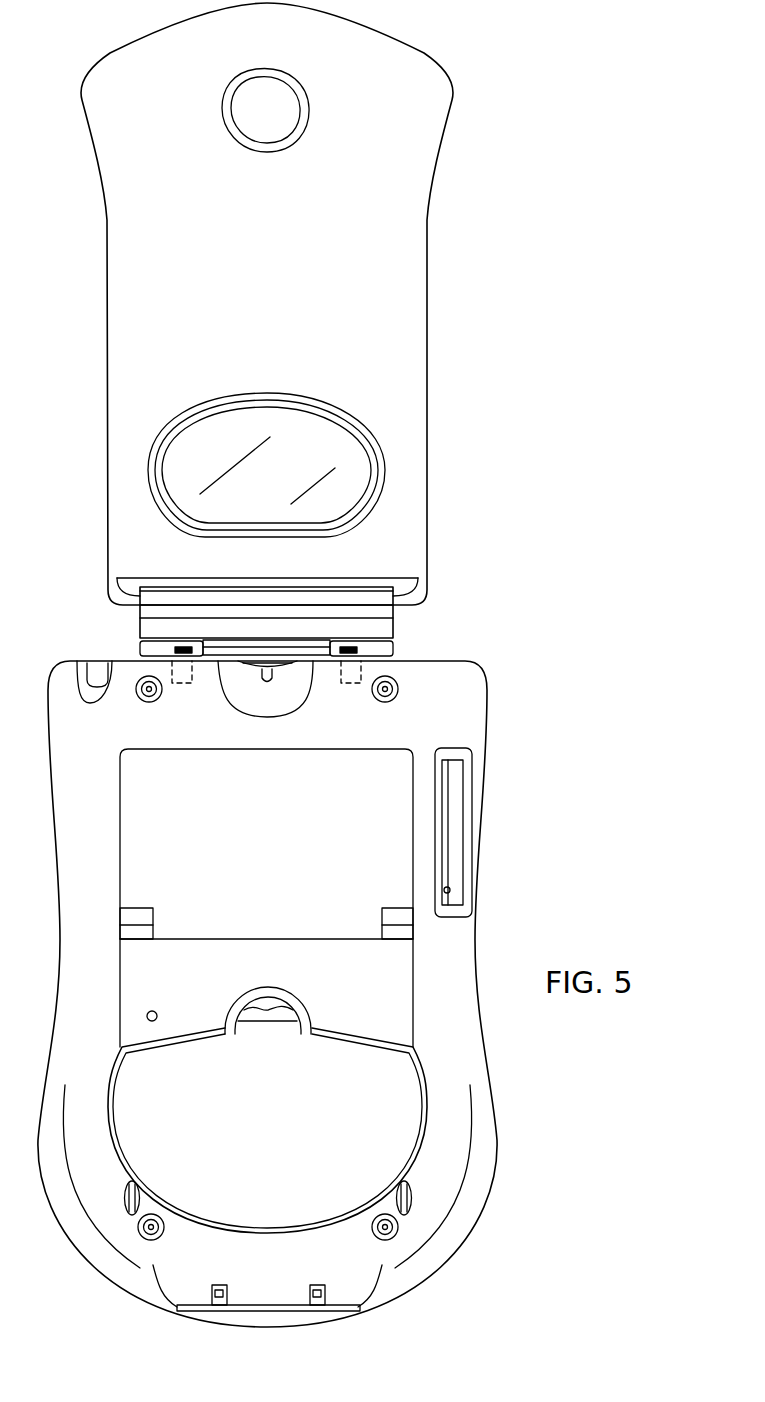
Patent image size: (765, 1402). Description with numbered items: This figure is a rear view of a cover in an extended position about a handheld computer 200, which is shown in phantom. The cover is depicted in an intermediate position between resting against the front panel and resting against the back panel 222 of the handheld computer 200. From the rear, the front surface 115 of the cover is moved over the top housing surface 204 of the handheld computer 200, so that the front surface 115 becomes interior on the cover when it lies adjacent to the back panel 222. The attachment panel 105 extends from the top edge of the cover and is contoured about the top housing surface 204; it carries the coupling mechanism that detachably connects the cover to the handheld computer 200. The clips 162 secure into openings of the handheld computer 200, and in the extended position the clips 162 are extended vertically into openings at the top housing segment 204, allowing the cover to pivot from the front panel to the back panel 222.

The front surface 115 is at (382, 134).
The attachment panel 105 is at (397, 627).
The handheld computer 200 is at (344, 942).
The top housing surface 204 is at (165, 661).
The clips 162 is at (173, 672).
The back panel 222 is at (467, 1062).